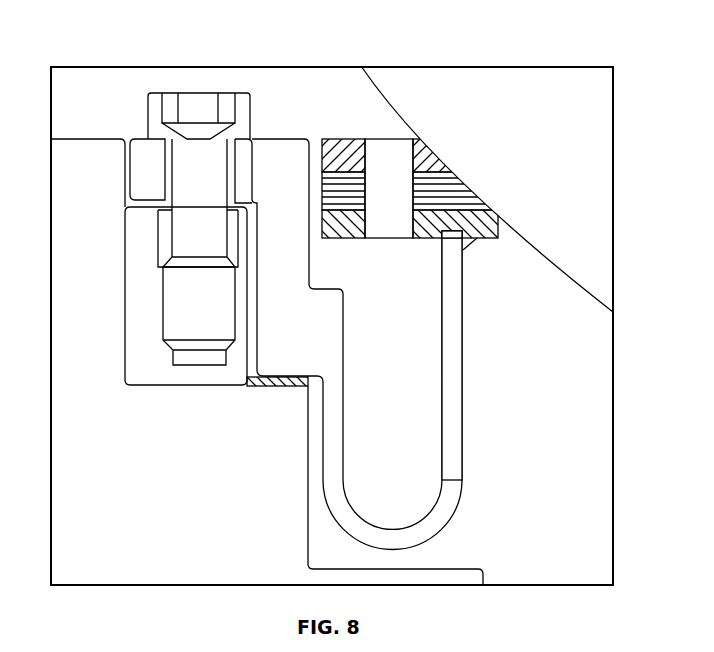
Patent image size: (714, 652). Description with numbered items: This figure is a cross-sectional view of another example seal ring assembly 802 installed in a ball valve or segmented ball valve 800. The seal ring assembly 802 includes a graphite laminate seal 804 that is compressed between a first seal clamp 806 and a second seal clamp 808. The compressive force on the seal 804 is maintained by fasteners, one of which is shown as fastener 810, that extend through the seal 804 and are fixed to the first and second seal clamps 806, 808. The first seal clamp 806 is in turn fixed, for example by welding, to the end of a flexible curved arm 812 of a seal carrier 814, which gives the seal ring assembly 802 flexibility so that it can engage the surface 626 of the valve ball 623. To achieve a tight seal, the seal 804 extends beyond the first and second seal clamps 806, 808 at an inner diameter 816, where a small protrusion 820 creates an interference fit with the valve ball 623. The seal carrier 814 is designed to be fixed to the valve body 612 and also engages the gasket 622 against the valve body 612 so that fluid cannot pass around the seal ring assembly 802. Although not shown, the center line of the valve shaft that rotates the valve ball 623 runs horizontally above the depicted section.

The ball valve or segmented ball valve 800 is at (146, 57).
The seal ring assembly 802 is at (396, 205).
The graphite laminate seal 804 is at (440, 185).
The first seal clamp 806 is at (428, 230).
The second seal clamp 808 is at (360, 158).
The fastener 810 is at (387, 227).
The flexible curved arm 812 is at (455, 413).
The seal carrier 814 is at (327, 363).
The inner diameter 816 is at (480, 195).
The small protrusion 820 is at (443, 170).
The valve body 612 is at (177, 490).
The gasket 622 is at (273, 387).
The valve ball 623 is at (557, 250).
The surface of the valve ball 626 is at (580, 287).